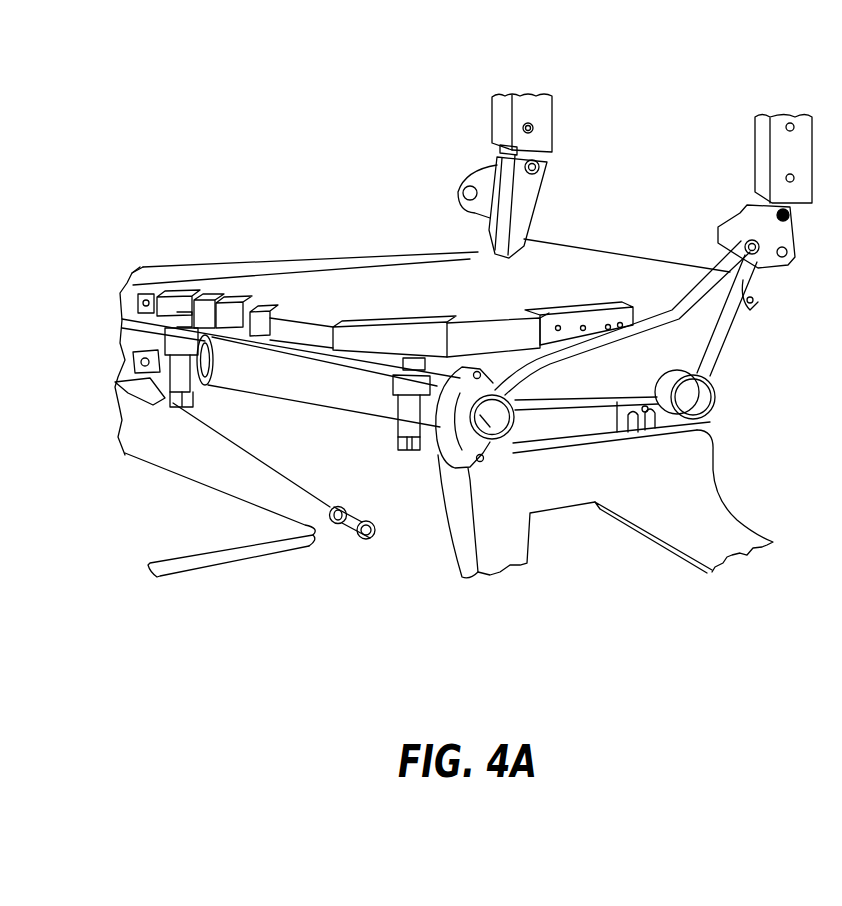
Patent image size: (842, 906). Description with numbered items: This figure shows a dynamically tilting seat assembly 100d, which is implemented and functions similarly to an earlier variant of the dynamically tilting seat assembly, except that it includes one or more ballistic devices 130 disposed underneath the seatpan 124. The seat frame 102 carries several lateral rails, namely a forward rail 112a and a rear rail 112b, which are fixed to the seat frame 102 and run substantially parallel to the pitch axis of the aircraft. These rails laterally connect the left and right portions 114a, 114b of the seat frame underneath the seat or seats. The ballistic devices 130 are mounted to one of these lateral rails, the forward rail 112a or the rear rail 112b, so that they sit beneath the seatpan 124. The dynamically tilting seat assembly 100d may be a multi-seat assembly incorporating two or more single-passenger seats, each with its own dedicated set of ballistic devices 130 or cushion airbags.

The dynamically tilting seat assembly 100d is at (77, 103).
The seat frame 102 is at (732, 272).
The forward rail 112a is at (310, 390).
The rear rail 112b is at (690, 393).
The right portion of the seat frame 114a is at (540, 490).
The left portion of the seat frame 114b is at (168, 435).
The seatpan 124 is at (445, 287).
The ballistic device 130 is at (120, 322).